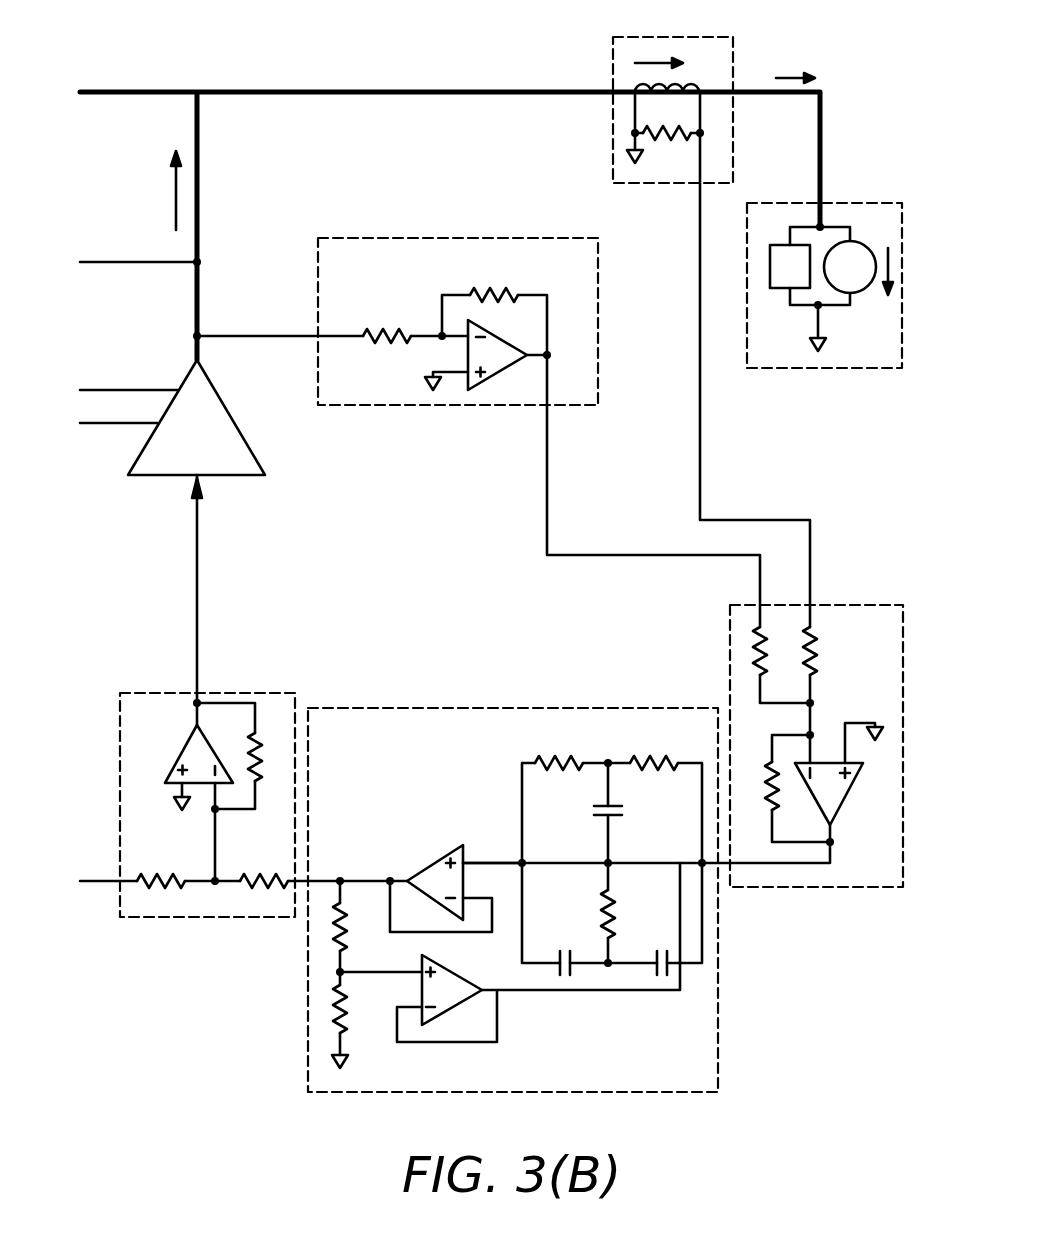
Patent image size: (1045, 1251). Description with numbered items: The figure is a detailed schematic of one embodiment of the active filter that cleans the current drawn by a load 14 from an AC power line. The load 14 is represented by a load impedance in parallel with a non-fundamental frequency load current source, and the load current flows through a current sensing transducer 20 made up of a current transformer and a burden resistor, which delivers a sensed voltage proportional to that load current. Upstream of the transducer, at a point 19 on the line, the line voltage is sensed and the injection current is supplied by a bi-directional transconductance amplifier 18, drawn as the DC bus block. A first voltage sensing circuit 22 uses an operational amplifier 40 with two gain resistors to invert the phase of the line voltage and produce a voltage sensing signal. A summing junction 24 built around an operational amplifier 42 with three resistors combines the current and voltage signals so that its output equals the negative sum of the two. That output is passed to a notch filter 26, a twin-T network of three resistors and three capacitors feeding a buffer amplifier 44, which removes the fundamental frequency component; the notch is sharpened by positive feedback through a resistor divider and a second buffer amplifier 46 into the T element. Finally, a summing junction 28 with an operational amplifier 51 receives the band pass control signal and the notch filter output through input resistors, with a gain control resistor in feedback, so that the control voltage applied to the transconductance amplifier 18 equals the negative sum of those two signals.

The load 14 is at (872, 203).
The transconductance amplifier 18 is at (228, 408).
The point 19 is at (197, 92).
The current sensing transducer 20 is at (613, 66).
The first voltage sensing circuit 22 is at (476, 432).
The summing junction 24 is at (802, 766).
The notch filter 26 is at (541, 900).
The summing junction 28 is at (187, 844).
The operational amplifier 40 is at (497, 366).
The operational amplifier 42 is at (818, 763).
The buffer amplifier 44 is at (447, 853).
The buffer amplifier 46 is at (450, 958).
The operational amplifier 51 is at (195, 727).